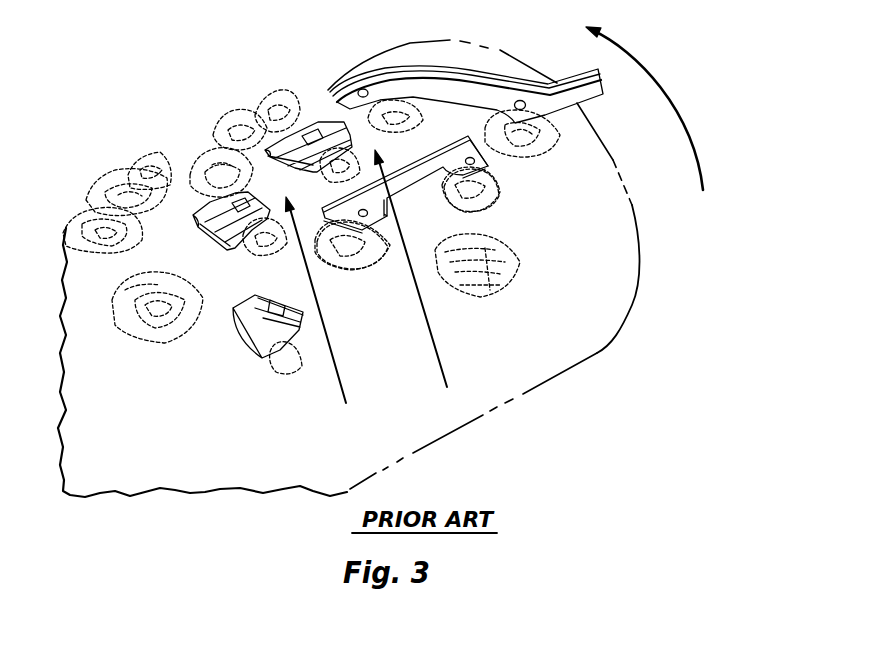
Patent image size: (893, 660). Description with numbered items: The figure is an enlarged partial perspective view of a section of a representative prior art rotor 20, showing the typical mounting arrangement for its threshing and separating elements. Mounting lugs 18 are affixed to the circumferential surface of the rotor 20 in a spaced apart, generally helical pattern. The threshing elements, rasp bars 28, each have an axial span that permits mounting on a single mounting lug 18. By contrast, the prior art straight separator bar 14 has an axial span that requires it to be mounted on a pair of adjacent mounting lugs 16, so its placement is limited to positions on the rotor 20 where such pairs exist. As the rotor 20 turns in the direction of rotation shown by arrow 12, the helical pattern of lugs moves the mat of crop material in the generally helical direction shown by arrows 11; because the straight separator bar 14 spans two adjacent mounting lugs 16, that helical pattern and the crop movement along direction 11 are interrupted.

The arrows 11 is at (333, 357).
The arrow 12 is at (662, 90).
The straight separator bar 14 is at (436, 143).
The pair of adjacent mounting lugs 16 is at (500, 187).
The mounting lug 18 is at (291, 370).
The rotor 20 is at (199, 496).
The rasp bar 28 is at (243, 341).